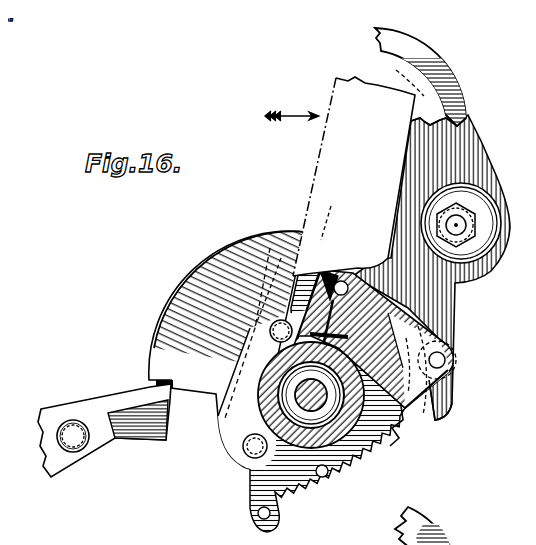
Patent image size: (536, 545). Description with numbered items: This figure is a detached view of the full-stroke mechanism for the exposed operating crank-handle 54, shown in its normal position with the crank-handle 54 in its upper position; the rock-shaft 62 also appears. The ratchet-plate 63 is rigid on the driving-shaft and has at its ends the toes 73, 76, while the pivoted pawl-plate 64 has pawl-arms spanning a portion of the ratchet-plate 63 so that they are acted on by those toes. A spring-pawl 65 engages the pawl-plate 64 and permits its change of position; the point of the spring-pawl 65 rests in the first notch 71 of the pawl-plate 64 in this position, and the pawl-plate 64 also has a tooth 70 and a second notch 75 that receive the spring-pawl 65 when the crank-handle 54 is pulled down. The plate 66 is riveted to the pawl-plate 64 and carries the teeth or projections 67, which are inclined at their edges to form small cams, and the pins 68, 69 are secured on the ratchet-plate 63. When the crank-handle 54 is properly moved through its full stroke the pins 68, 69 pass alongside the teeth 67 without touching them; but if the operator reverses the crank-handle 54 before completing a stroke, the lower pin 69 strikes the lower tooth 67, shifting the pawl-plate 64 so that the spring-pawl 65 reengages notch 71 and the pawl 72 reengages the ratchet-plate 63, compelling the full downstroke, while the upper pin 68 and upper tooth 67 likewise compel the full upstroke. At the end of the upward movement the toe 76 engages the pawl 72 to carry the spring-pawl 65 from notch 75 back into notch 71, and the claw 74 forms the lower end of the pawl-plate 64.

The exposed operating crank-handle 54 is at (350, 176).
The rock-shaft 62 is at (305, 302).
The ratchet-plate 63 is at (372, 452).
The pawl-plate 64 is at (438, 293).
The spring-pawl 65 is at (455, 70).
The plate 66 is at (404, 376).
The teeth or projections 67 is at (400, 422).
The upper pin 68 is at (380, 328).
The lower pin 69 is at (314, 470).
The tooth of the pawl-plate 70 is at (436, 298).
The first notch 71 is at (462, 112).
The pawl 72 is at (278, 230).
The toe 73 is at (255, 512).
The pawl tip 74 is at (448, 402).
The notch 75 is at (408, 112).
The toe 76 is at (332, 207).